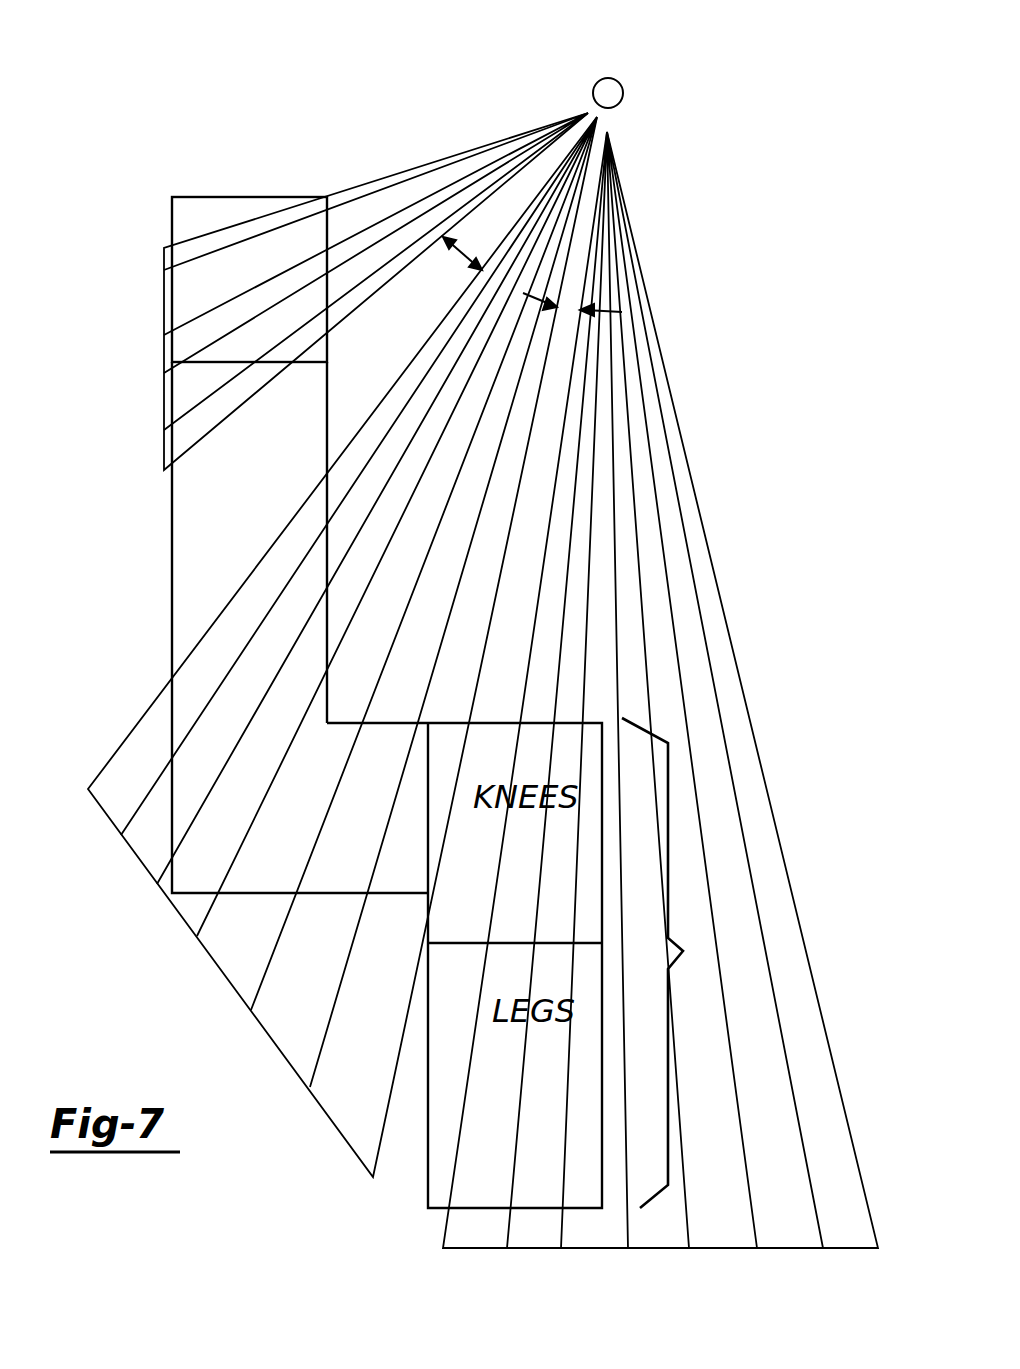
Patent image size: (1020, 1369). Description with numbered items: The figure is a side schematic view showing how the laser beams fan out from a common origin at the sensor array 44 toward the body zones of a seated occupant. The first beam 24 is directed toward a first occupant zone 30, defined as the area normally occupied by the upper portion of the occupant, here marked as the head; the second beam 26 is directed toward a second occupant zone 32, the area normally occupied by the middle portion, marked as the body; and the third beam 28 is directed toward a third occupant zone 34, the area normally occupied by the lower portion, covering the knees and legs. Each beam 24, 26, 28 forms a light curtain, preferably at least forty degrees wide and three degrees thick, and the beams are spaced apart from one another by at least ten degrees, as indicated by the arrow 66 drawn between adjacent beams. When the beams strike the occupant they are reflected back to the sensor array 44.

The first laser beam 24 is at (445, 178).
The second laser beam 26 is at (390, 440).
The third laser beam 28 is at (716, 618).
The first occupant zone 30 is at (193, 210).
The second occupant zone 32 is at (195, 575).
The third occupant zone 34 is at (683, 951).
The sensor array 44 is at (609, 78).
The arrow 66 is at (463, 253).